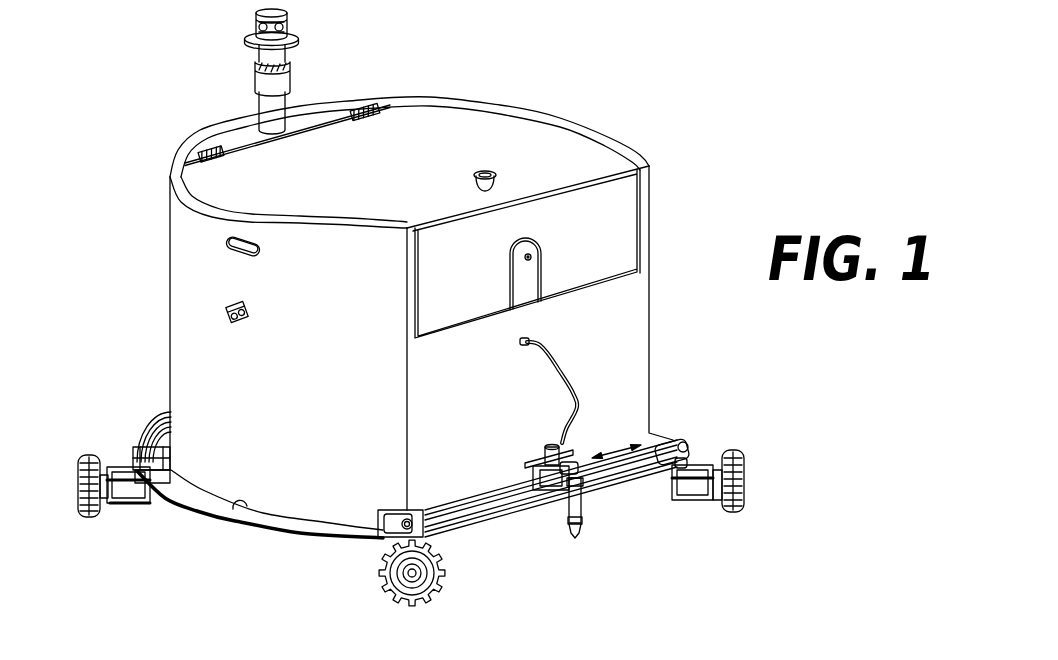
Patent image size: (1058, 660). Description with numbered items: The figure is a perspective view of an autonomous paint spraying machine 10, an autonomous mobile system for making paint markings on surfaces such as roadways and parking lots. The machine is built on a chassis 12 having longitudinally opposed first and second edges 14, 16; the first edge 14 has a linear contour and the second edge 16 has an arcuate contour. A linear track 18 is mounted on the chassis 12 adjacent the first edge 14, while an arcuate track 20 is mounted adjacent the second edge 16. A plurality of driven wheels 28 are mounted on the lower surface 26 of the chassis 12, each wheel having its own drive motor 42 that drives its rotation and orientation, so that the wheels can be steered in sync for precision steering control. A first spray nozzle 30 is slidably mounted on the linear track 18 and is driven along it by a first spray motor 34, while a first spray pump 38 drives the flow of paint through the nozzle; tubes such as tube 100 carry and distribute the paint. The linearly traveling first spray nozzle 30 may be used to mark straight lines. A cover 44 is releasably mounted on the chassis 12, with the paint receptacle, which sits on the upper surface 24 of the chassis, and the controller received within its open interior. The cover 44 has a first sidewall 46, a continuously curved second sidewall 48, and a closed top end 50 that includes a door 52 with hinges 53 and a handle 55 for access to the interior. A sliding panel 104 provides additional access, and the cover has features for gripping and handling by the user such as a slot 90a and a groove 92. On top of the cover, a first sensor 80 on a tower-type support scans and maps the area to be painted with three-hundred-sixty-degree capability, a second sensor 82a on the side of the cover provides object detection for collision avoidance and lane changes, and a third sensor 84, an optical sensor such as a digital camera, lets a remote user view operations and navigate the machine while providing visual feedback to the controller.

The autonomous paint spraying machine 10 is at (705, 92).
The chassis 12 is at (280, 534).
The first edge 14 is at (424, 528).
The second edge 16 is at (143, 480).
The linear track 18 is at (519, 503).
The arcuate track 20 is at (144, 430).
The upper surface 24 is at (202, 508).
The lower surface 26 is at (154, 540).
The driven wheels 28 is at (82, 497).
The first spray nozzle 30 is at (585, 506).
The first spray motor 34 is at (542, 500).
The first spray pump 38 is at (587, 489).
The drive motor 42 is at (125, 504).
The cover 44 is at (187, 203).
The first sidewall 46 is at (640, 392).
The second sidewall 48 is at (180, 323).
The closed top end 50 is at (304, 122).
The door 52 is at (553, 140).
The hinges 53 is at (212, 147).
The handle 55 is at (487, 170).
The first sensor 80 is at (289, 17).
The second sensor 82a is at (229, 310).
The third sensor 84 is at (549, 258).
The slot 90a is at (214, 241).
The groove 92 is at (243, 530).
The tube 100 is at (566, 357).
The sliding panel 104 is at (623, 257).